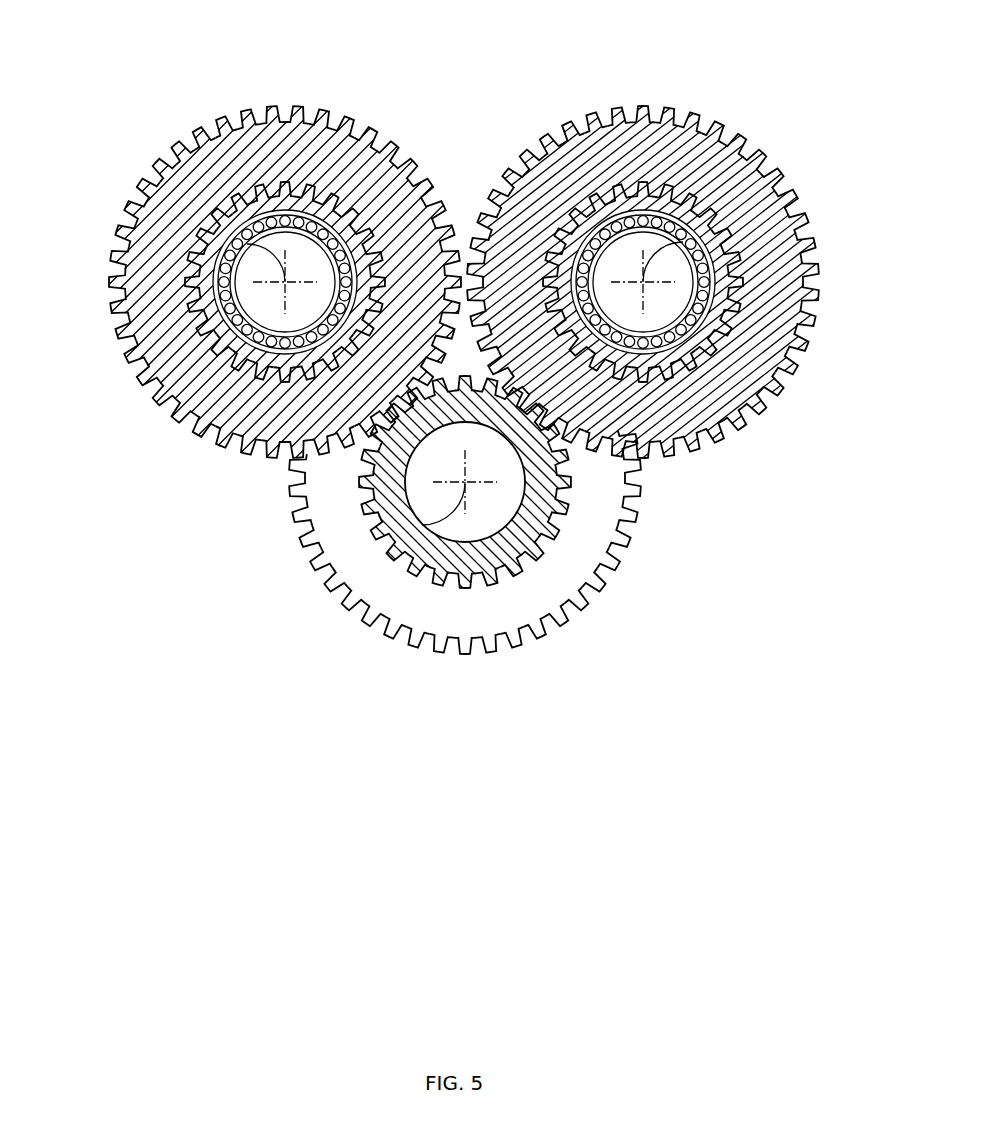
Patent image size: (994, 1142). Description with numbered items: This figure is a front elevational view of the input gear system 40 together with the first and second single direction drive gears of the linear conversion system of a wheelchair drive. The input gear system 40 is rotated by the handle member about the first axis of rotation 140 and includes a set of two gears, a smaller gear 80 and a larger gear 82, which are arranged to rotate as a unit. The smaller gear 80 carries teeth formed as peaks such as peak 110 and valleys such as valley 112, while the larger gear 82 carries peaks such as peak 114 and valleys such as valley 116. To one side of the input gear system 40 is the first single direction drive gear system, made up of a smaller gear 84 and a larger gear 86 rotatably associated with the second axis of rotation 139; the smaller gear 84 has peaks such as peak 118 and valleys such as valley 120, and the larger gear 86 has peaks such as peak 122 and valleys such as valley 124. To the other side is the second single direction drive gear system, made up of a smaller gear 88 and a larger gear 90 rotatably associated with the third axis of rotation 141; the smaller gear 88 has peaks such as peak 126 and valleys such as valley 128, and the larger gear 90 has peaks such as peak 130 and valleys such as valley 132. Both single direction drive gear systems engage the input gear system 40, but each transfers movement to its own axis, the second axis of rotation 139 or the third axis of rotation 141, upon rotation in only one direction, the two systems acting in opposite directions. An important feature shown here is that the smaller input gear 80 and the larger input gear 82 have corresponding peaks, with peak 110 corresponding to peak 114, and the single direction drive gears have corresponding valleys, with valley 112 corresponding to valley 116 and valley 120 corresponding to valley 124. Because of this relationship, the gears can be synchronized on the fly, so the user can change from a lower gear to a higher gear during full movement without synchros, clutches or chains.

The input gear system 40 is at (427, 581).
The smaller gear 80 is at (478, 505).
The larger gear 82 is at (466, 581).
The smaller gear 84 is at (674, 249).
The larger gear 86 is at (674, 249).
The smaller gear 88 is at (197, 312).
The larger gear 90 is at (245, 289).
The peak 110 is at (552, 505).
The valley 112 is at (523, 542).
The peak 114 is at (466, 561).
The valley 116 is at (592, 596).
The peak 118 is at (725, 198).
The valley 120 is at (725, 213).
The peak 122 is at (674, 249).
The valley 124 is at (674, 249).
The peak 126 is at (205, 226).
The valley 128 is at (205, 226).
The peak 130 is at (245, 289).
The valley 132 is at (245, 289).
The second axis of rotation 139 is at (712, 228).
The first axis of rotation 140 is at (478, 505).
The third axis of rotation 141 is at (205, 303).